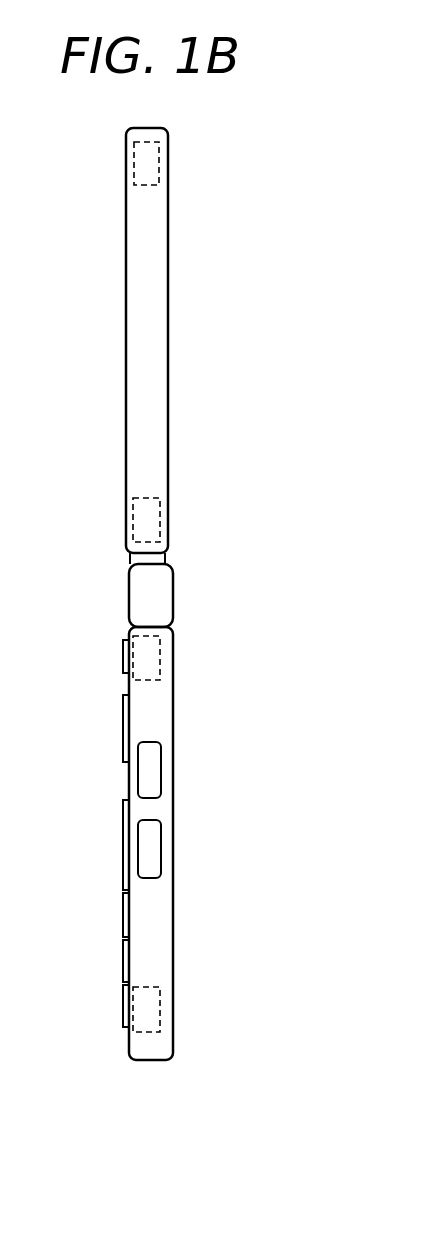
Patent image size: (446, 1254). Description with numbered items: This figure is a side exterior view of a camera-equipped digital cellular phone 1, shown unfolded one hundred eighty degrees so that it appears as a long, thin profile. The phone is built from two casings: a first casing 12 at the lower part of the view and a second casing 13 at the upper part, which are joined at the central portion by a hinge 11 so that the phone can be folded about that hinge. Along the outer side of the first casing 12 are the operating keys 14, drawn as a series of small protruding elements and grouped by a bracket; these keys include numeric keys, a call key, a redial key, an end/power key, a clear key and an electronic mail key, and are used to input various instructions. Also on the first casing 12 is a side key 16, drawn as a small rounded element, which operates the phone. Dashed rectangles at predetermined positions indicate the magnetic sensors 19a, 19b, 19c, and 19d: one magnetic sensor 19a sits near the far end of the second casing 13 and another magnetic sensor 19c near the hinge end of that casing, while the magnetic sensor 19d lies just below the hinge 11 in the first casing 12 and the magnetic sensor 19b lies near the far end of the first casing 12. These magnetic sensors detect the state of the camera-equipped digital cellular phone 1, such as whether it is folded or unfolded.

The camera-equipped digital cellular phone 1 is at (175, 594).
The hinge 11 is at (160, 595).
The first casing 12 is at (162, 713).
The second casing 13 is at (158, 328).
The operating keys 14 is at (107, 655).
The side key 16 is at (161, 772).
The magnetic sensor 19a is at (159, 162).
The magnetic sensor 19b is at (160, 1008).
The magnetic sensor 19c is at (160, 513).
The magnetic sensor 19d is at (160, 657).